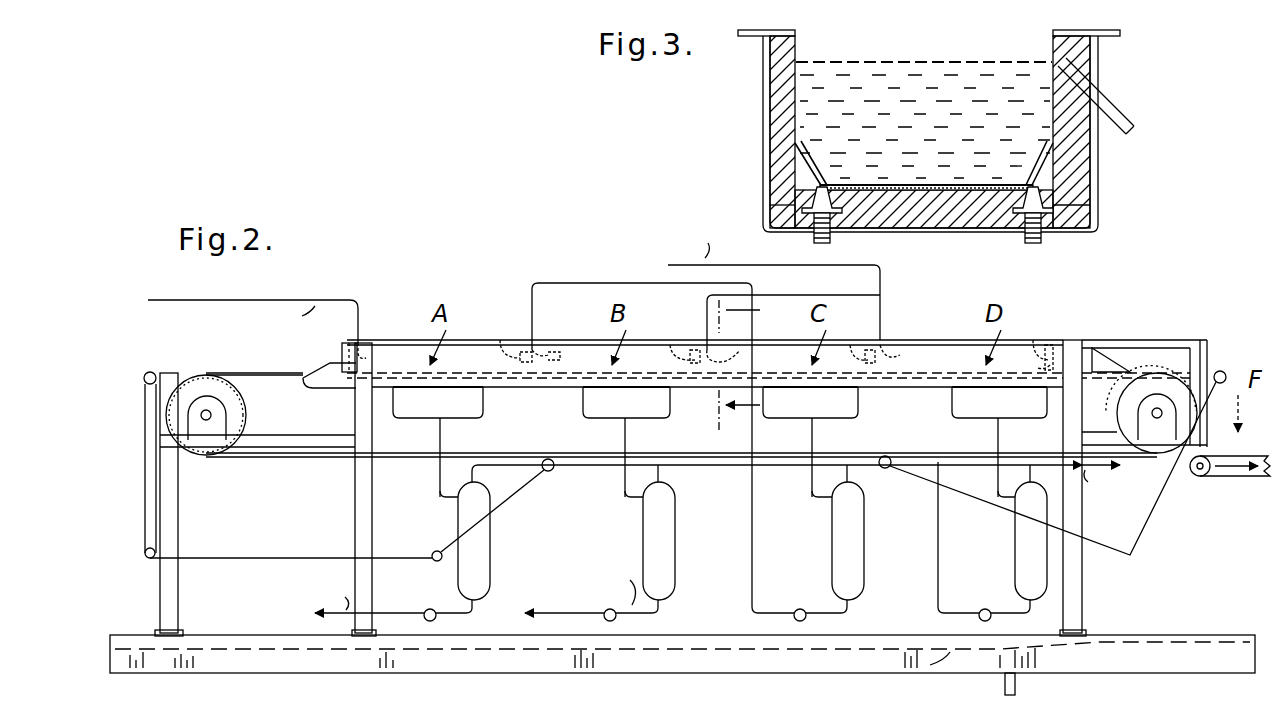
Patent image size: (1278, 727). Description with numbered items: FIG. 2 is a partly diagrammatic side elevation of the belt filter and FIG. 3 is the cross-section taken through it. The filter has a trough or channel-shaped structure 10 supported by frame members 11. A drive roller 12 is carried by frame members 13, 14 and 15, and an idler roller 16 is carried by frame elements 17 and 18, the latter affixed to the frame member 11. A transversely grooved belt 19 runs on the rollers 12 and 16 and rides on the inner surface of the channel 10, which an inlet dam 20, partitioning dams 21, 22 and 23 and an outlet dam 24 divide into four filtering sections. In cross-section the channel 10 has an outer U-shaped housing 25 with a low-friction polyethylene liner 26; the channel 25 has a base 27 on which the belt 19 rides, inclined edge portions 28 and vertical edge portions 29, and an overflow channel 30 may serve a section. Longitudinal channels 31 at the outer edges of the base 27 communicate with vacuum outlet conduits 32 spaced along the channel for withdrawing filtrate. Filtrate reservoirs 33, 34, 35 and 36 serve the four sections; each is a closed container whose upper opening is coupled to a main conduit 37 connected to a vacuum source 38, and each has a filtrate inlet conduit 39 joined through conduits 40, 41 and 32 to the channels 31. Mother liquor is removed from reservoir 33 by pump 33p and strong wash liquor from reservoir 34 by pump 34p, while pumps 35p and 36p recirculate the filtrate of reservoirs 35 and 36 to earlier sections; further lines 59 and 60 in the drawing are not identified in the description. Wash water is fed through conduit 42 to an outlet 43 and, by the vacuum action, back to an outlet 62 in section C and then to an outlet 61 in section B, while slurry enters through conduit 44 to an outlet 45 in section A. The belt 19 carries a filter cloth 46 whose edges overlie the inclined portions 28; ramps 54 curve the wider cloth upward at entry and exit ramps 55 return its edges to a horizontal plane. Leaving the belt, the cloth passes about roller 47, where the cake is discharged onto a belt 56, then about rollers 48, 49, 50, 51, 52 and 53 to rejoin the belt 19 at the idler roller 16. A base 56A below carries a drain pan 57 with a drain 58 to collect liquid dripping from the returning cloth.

In FIG. 3, the trough or channel-shaped structure 10 is at (1110, 183).
In FIG. 2, the trough or channel-shaped structure 10 is at (1020, 338).
In FIG. 2, the frame members 11 is at (356, 500).
In FIG. 2, the drive roller 12 is at (1160, 372).
In FIG. 2, the frame member 13 is at (1105, 445).
In FIG. 2, the frame member 14 is at (1205, 342).
In FIG. 2, the frame member 15 is at (1145, 340).
In FIG. 2, the idler roller 16 is at (200, 385).
In FIG. 2, the frame element 17 is at (172, 500).
In FIG. 2, the frame element 18 is at (265, 457).
In FIG. 3, the transversely grooved belt 19 is at (908, 188).
In FIG. 2, the transversely grooved belt 19 is at (255, 380).
In FIG. 2, the inlet dam 20 is at (343, 350).
In FIG. 2, the partitioning dam 21 is at (500, 338).
In FIG. 2, the partitioning dam 22 is at (670, 343).
In FIG. 2, the partitioning dam 23 is at (855, 343).
In FIG. 2, the outlet dam 24 is at (1048, 343).
In FIG. 3, the outer U-shaped housing 25 is at (1098, 158).
In FIG. 3, the liner 26 is at (778, 145).
In FIG. 3, the base 27 is at (944, 190).
In FIG. 3, the inclined edge portions 28 is at (808, 168).
In FIG. 3, the vertical edge portions 29 is at (783, 88).
In FIG. 3, the overflow channel 30 is at (1120, 100).
In FIG. 3, the longitudinal channels 31 is at (826, 196).
In FIG. 3, the vacuum outlet conduits 32 is at (832, 240).
In FIG. 2, the vacuum outlet conduits 32 is at (478, 396).
In FIG. 2, the filtrate reservoir 33 is at (490, 545).
In FIG. 2, the pump 33p is at (430, 608).
In FIG. 2, the filtrate reservoir 34 is at (675, 542).
In FIG. 2, the pump 34p is at (632, 590).
In FIG. 2, the filtrate reservoir 35 is at (864, 540).
In FIG. 2, the pump 35p is at (808, 608).
In FIG. 2, the filtrate reservoir 36 is at (1015, 545).
In FIG. 2, the pump 36p is at (990, 608).
In FIG. 2, the main conduit 37 is at (592, 470).
In FIG. 2, the vacuum source 38 is at (1086, 476).
In FIG. 2, the filtrate inlet conduit 39 is at (440, 490).
In FIG. 2, the conduit 40 is at (441, 433).
In FIG. 2, the conduit 41 is at (418, 418).
In FIG. 2, the wash water conduit 42 is at (797, 275).
In FIG. 2, the wash water outlet 43 is at (920, 322).
In FIG. 2, the slurry conduit 44 is at (333, 298).
In FIG. 2, the slurry outlet 45 is at (368, 340).
In FIG. 3, the filter cloth 46 is at (872, 186).
In FIG. 2, the roller 47 is at (1222, 371).
In FIG. 2, the roller 48 is at (1133, 556).
In FIG. 2, the roller 49 is at (885, 470).
In FIG. 2, the roller 50 is at (540, 472).
In FIG. 2, the roller 51 is at (432, 555).
In FIG. 2, the roller 52 is at (148, 560).
In FIG. 2, the roller 53 is at (148, 372).
In FIG. 2, the ramps 54 is at (320, 370).
In FIG. 2, the exit ramps 55 is at (1105, 355).
In FIG. 2, the belt 56 is at (1225, 478).
In FIG. 2, the base 56A is at (1218, 634).
In FIG. 2, the drain pan 57 is at (945, 665).
In FIG. 2, the drain 58 is at (1016, 688).
In FIG. 2, the wash water line 59 is at (752, 494).
In FIG. 2, the wash water line 60 is at (938, 562).
In FIG. 2, the outlet 61 is at (550, 346).
In FIG. 2, the outlet 62 is at (745, 348).